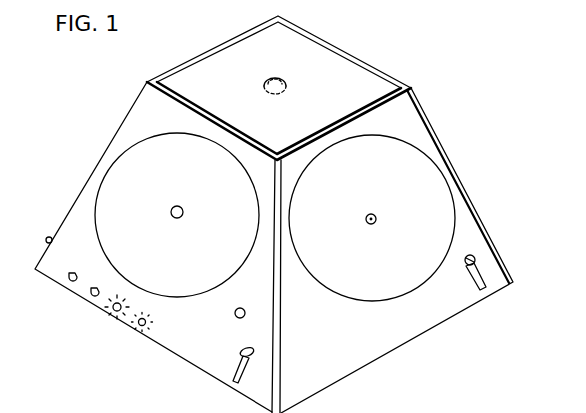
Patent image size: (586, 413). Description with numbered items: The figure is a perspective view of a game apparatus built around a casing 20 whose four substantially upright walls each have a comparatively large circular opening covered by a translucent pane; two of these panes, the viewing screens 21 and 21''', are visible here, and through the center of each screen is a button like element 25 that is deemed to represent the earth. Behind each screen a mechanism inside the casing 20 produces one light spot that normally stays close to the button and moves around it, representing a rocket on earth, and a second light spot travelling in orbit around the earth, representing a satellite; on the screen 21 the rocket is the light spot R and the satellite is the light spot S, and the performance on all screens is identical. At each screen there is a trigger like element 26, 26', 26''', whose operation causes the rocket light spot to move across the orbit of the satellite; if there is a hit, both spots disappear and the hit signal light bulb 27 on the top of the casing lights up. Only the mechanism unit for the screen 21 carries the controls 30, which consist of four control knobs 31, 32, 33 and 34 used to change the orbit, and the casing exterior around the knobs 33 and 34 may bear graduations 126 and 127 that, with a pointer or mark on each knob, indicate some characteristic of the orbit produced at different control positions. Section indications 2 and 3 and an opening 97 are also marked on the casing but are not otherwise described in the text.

The casing 20 is at (127, 109).
The viewing screen 21 is at (177, 228).
The viewing screen 21''' is at (372, 240).
The button like element 25 is at (181, 218).
The trigger like element 26 is at (249, 369).
The trigger like element 26' is at (47, 217).
The trigger like element 26''' is at (460, 282).
The hit signal light bulb 27 is at (283, 76).
The controls 30 is at (92, 268).
The control knob 31 is at (68, 281).
The control knob 32 is at (91, 297).
The control knob 33 is at (111, 314).
The control knob 34 is at (133, 333).
The aperture 97 is at (235, 316).
The graduations 126 is at (125, 296).
The graduations 127 is at (148, 326).
The section line 2- 2 is at (232, 107).
The section line 3- 3 is at (487, 197).
The light spot R is at (173, 205).
The light spot S is at (218, 201).